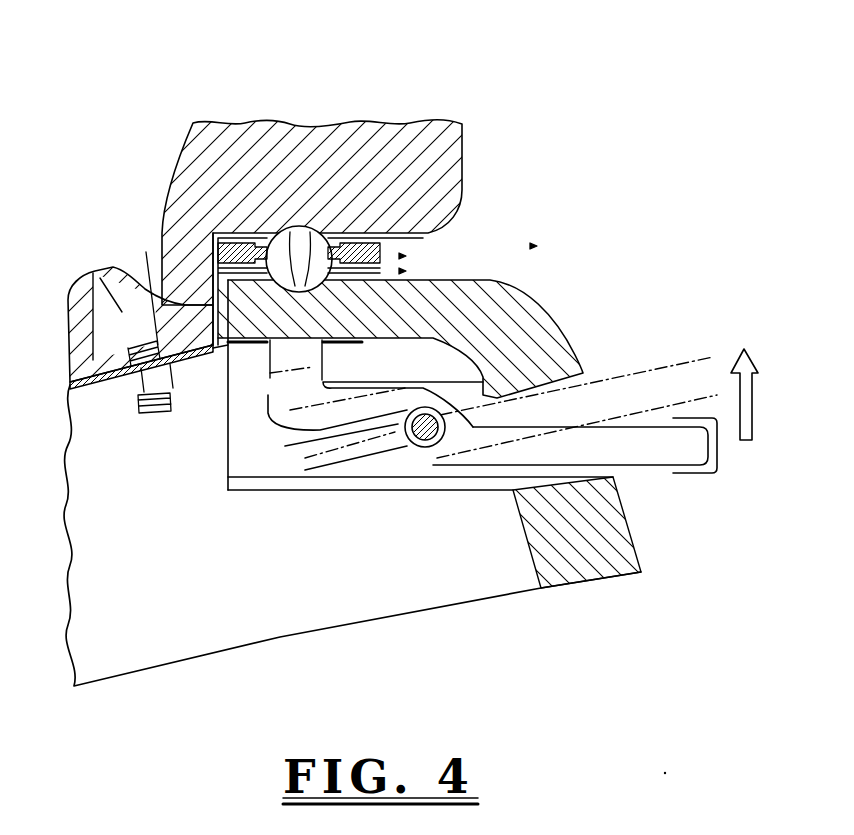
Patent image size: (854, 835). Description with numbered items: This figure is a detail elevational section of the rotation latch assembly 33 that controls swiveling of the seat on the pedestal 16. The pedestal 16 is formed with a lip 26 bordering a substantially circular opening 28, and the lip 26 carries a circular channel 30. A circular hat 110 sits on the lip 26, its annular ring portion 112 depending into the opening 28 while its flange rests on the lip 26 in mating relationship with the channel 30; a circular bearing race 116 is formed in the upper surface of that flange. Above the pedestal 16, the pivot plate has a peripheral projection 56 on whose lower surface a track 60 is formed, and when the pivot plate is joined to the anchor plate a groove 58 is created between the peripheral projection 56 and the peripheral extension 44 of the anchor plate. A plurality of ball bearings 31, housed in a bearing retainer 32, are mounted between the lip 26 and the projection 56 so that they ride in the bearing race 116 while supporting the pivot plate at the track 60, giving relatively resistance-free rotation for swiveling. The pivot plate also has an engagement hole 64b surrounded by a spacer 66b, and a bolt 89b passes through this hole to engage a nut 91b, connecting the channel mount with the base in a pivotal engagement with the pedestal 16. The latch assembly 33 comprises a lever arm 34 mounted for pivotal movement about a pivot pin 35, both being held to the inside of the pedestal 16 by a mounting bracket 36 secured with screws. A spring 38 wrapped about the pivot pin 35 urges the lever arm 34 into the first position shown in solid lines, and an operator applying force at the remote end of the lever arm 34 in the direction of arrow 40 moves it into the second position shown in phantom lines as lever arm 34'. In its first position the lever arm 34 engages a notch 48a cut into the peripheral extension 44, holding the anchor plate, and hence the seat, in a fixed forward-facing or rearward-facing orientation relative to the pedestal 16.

The pedestal 16 is at (572, 600).
The lip 26 is at (420, 298).
The opening 28 is at (113, 267).
The channel 30 is at (288, 230).
The ball bearings 31 is at (290, 232).
The bearing retainer 32 is at (400, 243).
The latch assembly 33 is at (480, 500).
The lever arm 34 is at (469, 535).
The lever arm in second position 34' is at (495, 491).
The pivot pin 35 is at (432, 440).
The mounting bracket 36 is at (248, 470).
The spring 38 is at (353, 368).
The arrow 40 is at (753, 397).
The peripheral extension 44 is at (133, 387).
The notch 48a is at (222, 343).
The peripheral projection 56 is at (433, 125).
The groove 58 is at (174, 185).
The track 60 is at (312, 228).
The engagement hole 64b is at (146, 252).
The spacer 66b is at (164, 230).
The bolt 89b is at (138, 337).
The nut 91b is at (137, 393).
The hat 110 is at (390, 272).
The annular ring portion 112 is at (337, 238).
The bearing race 116 is at (294, 232).